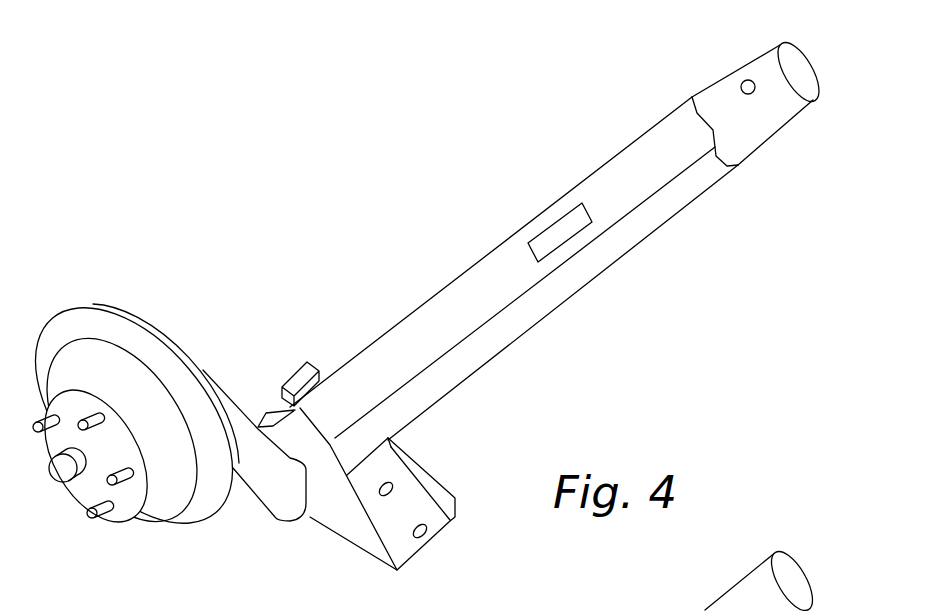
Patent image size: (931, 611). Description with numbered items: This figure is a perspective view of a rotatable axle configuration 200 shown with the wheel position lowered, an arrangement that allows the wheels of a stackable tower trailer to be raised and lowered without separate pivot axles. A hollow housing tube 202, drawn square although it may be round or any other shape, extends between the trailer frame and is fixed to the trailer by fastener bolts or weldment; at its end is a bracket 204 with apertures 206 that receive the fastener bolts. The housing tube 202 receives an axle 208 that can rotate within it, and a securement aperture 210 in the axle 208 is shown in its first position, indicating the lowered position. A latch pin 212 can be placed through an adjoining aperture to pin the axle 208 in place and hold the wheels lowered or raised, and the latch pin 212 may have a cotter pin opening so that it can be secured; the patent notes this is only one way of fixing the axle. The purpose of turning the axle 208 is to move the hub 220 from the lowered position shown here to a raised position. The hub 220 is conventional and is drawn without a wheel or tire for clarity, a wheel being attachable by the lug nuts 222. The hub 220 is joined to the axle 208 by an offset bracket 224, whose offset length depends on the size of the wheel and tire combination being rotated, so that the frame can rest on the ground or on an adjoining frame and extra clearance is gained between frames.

The rotatable axle configuration 200 is at (608, 312).
The hollow housing tube 202 is at (697, 198).
The bracket 204 is at (440, 482).
The apertures 206 is at (422, 533).
The axle 208 is at (777, 132).
The securement aperture 210 is at (745, 79).
The latch pin 212 is at (573, 218).
The hub 220 is at (137, 322).
The lug nuts 222 is at (130, 495).
The offset bracket 224 is at (280, 522).